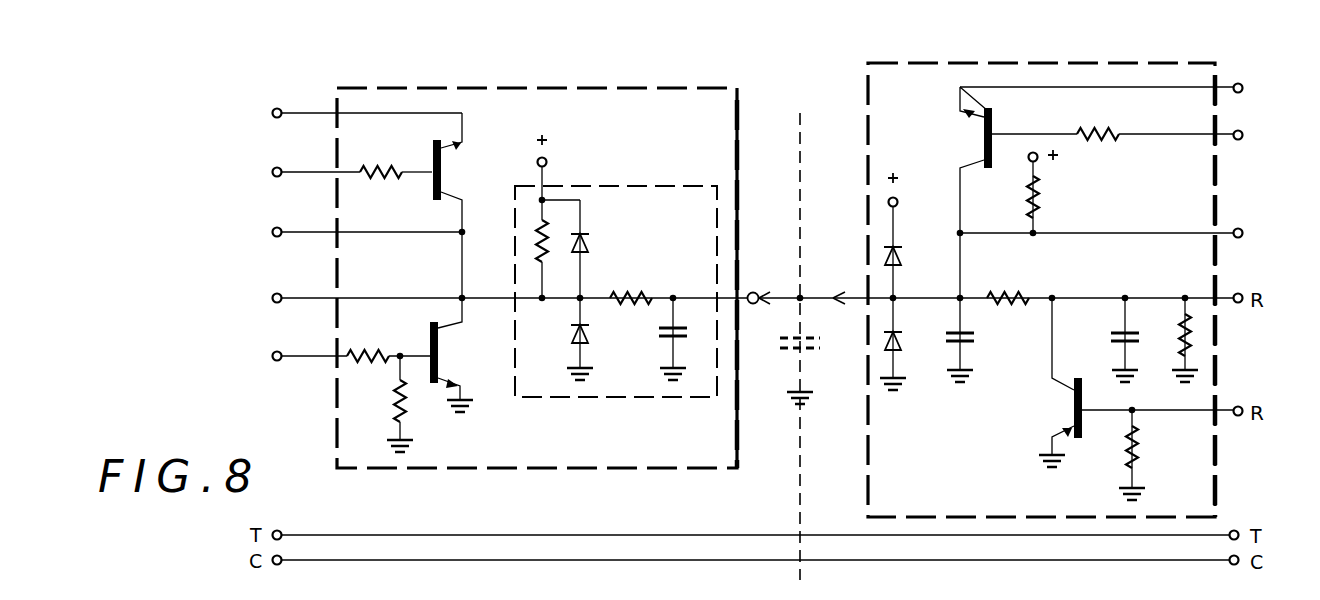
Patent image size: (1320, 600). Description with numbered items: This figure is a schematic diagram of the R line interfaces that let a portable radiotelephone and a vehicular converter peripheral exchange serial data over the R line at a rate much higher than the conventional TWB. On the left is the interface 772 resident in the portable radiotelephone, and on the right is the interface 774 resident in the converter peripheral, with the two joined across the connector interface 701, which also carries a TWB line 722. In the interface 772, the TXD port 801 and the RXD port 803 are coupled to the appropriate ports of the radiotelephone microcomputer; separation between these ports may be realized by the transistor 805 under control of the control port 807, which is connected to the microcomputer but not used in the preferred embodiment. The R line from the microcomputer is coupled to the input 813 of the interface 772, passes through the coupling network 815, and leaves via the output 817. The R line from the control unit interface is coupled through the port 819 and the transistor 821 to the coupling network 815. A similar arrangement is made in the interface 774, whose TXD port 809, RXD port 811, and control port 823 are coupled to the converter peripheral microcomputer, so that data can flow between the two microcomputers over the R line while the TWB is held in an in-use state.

The TXD port 801 is at (275, 108).
The control port 807 is at (275, 167).
The RXD port 803 is at (275, 227).
The input 813 is at (275, 293).
The port 819 is at (275, 351).
The transistor 805 is at (448, 172).
The transistor 821 is at (447, 346).
The coupling network 815 is at (633, 186).
The interface 772 is at (737, 88).
The connector interface 701 is at (802, 134).
The interface 774 is at (867, 192).
The output 817 is at (755, 292).
The TWB line 722 is at (835, 286).
The TXD port 809 is at (1243, 86).
The control port 823 is at (1243, 133).
The RXD port 811 is at (1243, 231).